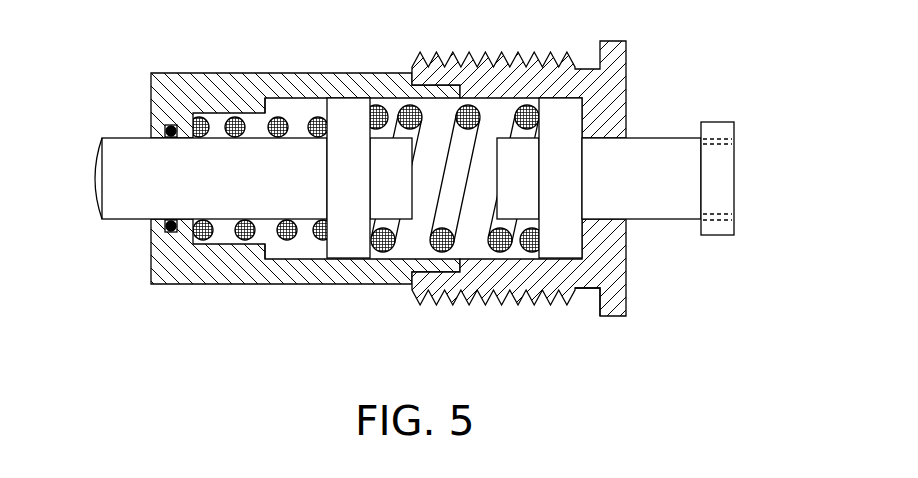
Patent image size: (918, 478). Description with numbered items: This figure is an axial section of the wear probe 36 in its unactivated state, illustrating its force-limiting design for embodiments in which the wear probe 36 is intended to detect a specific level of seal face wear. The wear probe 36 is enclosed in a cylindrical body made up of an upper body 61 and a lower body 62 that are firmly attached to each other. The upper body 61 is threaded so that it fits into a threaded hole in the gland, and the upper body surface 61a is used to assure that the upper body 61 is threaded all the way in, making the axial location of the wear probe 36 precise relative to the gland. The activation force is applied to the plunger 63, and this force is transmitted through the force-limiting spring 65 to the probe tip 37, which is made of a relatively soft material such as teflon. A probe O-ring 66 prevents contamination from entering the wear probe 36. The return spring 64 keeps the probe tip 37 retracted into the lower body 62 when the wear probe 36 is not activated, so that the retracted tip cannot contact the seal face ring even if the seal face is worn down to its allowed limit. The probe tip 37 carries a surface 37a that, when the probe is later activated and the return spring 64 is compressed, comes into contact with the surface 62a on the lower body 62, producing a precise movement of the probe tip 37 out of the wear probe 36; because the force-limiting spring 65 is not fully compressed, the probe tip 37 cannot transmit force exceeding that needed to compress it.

The wear probe 36 is at (431, 206).
The probe tip 37 is at (247, 203).
The surface on probe tip 37a is at (315, 255).
The upper body 61 is at (537, 215).
The upper body surface 61a is at (586, 307).
The lower body 62 is at (305, 212).
The surface on lower body 62a is at (279, 254).
The plunger 63 is at (720, 236).
The return spring 64 is at (280, 128).
The force-limiting spring 65 is at (407, 115).
The probe O-ring 66 is at (163, 229).